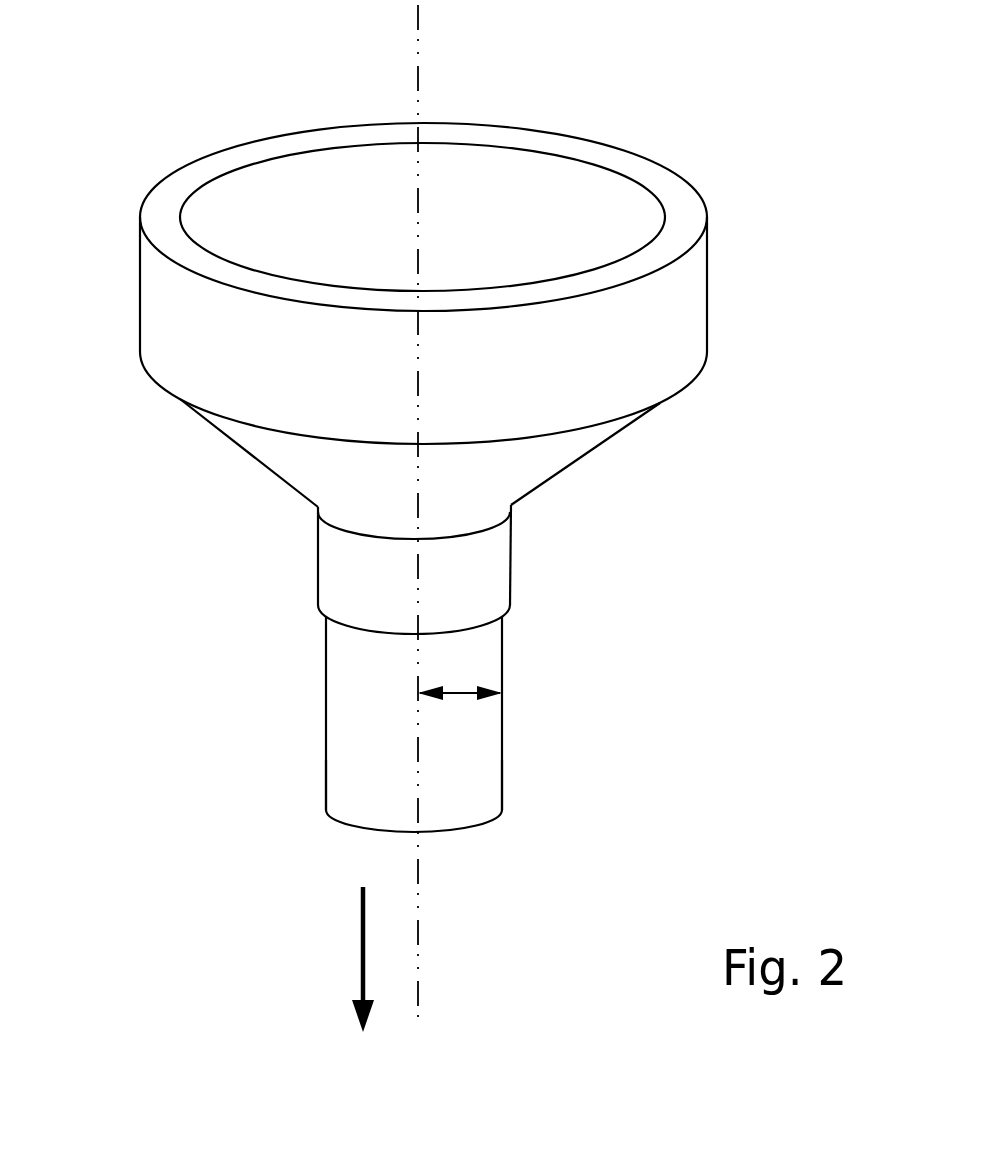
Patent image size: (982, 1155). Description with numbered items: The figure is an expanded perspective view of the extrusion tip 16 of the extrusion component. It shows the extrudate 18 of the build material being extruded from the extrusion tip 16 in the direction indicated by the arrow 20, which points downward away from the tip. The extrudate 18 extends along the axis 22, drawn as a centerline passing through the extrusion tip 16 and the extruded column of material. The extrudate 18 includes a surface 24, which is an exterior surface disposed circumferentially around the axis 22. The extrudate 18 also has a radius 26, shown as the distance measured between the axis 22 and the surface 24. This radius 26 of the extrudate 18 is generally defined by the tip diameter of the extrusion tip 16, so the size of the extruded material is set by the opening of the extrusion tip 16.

The extrusion tip 16 is at (165, 512).
The extrudate 18 is at (282, 693).
The arrow 20 is at (360, 952).
The axis 22 is at (418, 955).
The surface 24 is at (326, 765).
The radius 26 is at (460, 697).